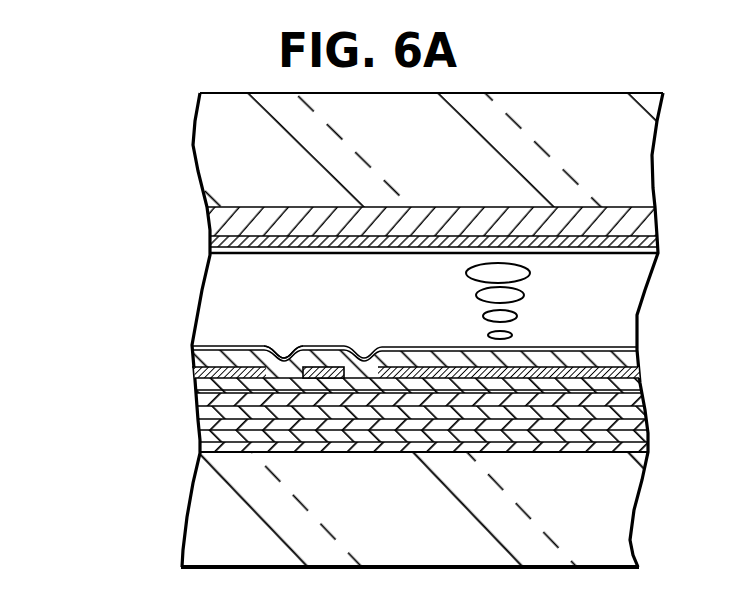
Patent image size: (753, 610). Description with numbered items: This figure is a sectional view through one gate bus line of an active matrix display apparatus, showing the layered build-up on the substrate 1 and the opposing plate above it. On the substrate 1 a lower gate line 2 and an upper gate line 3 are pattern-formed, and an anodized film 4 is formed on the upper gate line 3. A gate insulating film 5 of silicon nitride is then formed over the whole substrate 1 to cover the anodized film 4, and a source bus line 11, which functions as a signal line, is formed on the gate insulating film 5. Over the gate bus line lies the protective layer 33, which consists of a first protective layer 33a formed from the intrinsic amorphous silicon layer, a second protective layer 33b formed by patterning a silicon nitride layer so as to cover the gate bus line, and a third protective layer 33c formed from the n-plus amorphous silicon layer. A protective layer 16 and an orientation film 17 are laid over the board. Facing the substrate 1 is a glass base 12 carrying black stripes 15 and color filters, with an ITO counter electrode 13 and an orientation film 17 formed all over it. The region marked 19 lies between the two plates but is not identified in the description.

The substrate 1 is at (418, 556).
The lower gate line 2 is at (200, 447).
The upper gate line 3 is at (200, 436).
The anodized film 4 is at (205, 423).
The gate insulating film 5 is at (419, 428).
The source bus line 11 is at (323, 372).
The glass base 12 is at (205, 148).
The counter electrode 13 is at (210, 246).
The black stripe 15 is at (213, 220).
The protective layer 16 is at (268, 358).
The orientation film 17 is at (215, 345).
The liquid crystal material 19 is at (630, 306).
The protective layer 33 is at (98, 402).
The first protective layer 33a is at (196, 397).
The second protective layer 33b is at (194, 376).
The third protective layer 33c is at (192, 356).